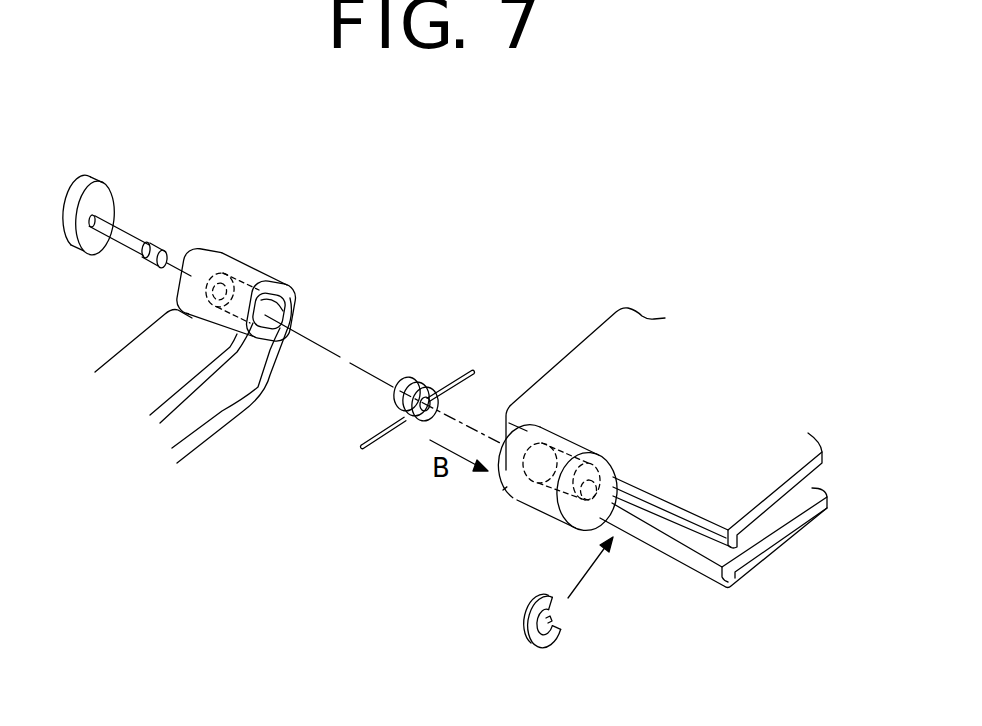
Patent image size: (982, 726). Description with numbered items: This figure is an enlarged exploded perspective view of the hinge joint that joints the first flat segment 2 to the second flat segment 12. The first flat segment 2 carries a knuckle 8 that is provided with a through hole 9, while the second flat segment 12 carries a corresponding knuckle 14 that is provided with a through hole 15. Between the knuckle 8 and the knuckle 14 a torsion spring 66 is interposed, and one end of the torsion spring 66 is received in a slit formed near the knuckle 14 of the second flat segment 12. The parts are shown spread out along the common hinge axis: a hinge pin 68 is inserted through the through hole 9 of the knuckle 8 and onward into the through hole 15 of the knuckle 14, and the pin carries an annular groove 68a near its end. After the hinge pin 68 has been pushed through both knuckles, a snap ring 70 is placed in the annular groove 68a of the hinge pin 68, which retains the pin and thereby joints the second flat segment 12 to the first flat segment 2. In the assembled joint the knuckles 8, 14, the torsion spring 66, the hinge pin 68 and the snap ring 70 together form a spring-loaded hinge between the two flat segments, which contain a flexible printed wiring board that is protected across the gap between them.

The first flat segment 2 is at (143, 350).
The knuckle 8 is at (235, 257).
The through hole 9 is at (293, 306).
The second flat segment 12 is at (595, 352).
The knuckle 14 is at (543, 518).
The through hole 15 is at (503, 490).
The torsion spring 66 is at (418, 380).
The hinge pin 68 is at (120, 221).
The annular groove 68a is at (152, 238).
The snap ring 70 is at (557, 632).